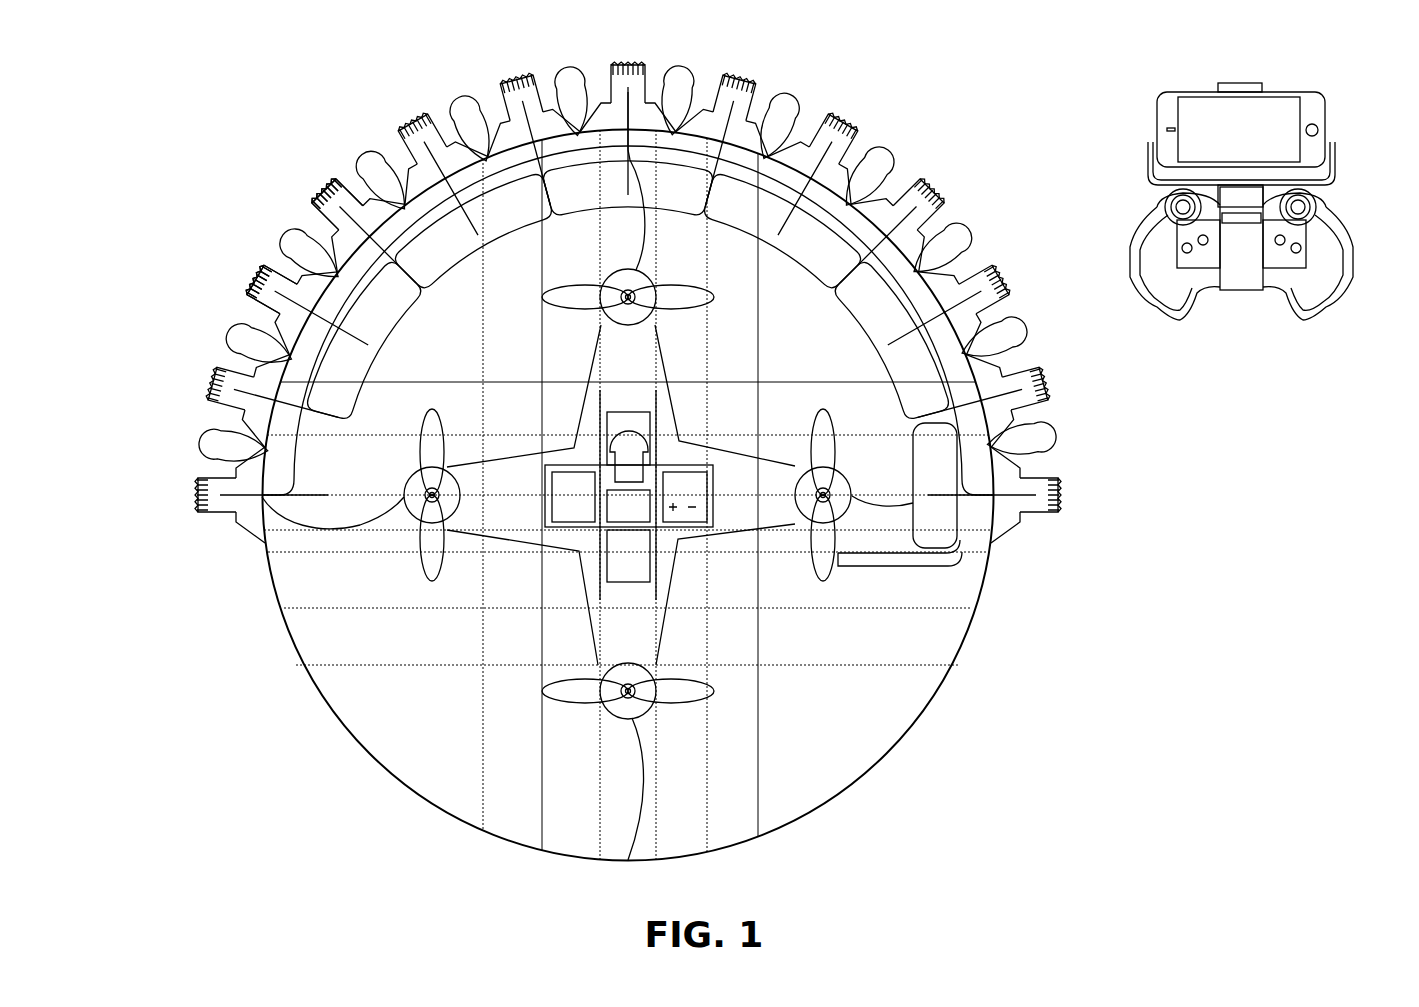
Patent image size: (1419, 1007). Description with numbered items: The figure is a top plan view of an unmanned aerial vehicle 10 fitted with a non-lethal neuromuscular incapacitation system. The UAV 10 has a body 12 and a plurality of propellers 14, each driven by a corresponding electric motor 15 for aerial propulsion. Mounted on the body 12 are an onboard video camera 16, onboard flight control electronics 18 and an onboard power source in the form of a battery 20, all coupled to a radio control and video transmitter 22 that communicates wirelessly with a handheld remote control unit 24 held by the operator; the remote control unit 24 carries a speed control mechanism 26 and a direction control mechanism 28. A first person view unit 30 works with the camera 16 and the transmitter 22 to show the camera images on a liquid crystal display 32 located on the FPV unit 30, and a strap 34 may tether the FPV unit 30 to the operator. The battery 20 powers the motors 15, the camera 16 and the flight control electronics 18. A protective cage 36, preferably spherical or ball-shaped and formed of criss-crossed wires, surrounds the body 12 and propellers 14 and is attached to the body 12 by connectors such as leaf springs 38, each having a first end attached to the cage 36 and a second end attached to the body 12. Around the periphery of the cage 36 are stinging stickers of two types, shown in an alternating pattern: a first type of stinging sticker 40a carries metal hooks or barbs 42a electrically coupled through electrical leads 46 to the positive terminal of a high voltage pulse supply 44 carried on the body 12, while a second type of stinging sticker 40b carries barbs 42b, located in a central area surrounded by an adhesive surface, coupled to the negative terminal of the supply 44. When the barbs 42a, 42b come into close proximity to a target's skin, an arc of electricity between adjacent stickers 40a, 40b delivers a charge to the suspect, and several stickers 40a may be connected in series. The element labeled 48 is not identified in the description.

The unmanned aerial vehicle 10 is at (938, 765).
The body 12 is at (560, 535).
The propellers 14 is at (416, 420).
The electric motors 15 is at (394, 473).
The onboard video camera 16 is at (648, 418).
The onboard flight control electronics 18 is at (565, 472).
The battery 20 is at (628, 410).
The radio control and video transmitter 22 is at (640, 512).
The handheld remote control unit 24 is at (1245, 300).
The speed control mechanism 26 is at (1160, 210).
The direction control mechanism 28 is at (1320, 210).
The first person view unit 30 is at (1247, 202).
The liquid crystal display 32 is at (1206, 95).
The strap 34 is at (1135, 152).
The protective cage 36 is at (912, 690).
The leaf springs 38 is at (650, 758).
The first type of stinging sticker 40a is at (230, 268).
The second type of stinging sticker 40b is at (290, 190).
The metal hooks or barbs 42a is at (268, 292).
The metal hooks or barbs 42b is at (305, 182).
The high voltage pulse supply 44 is at (694, 465).
The electrical leads 46 is at (918, 575).
The petal protrusion 48 is at (296, 236).